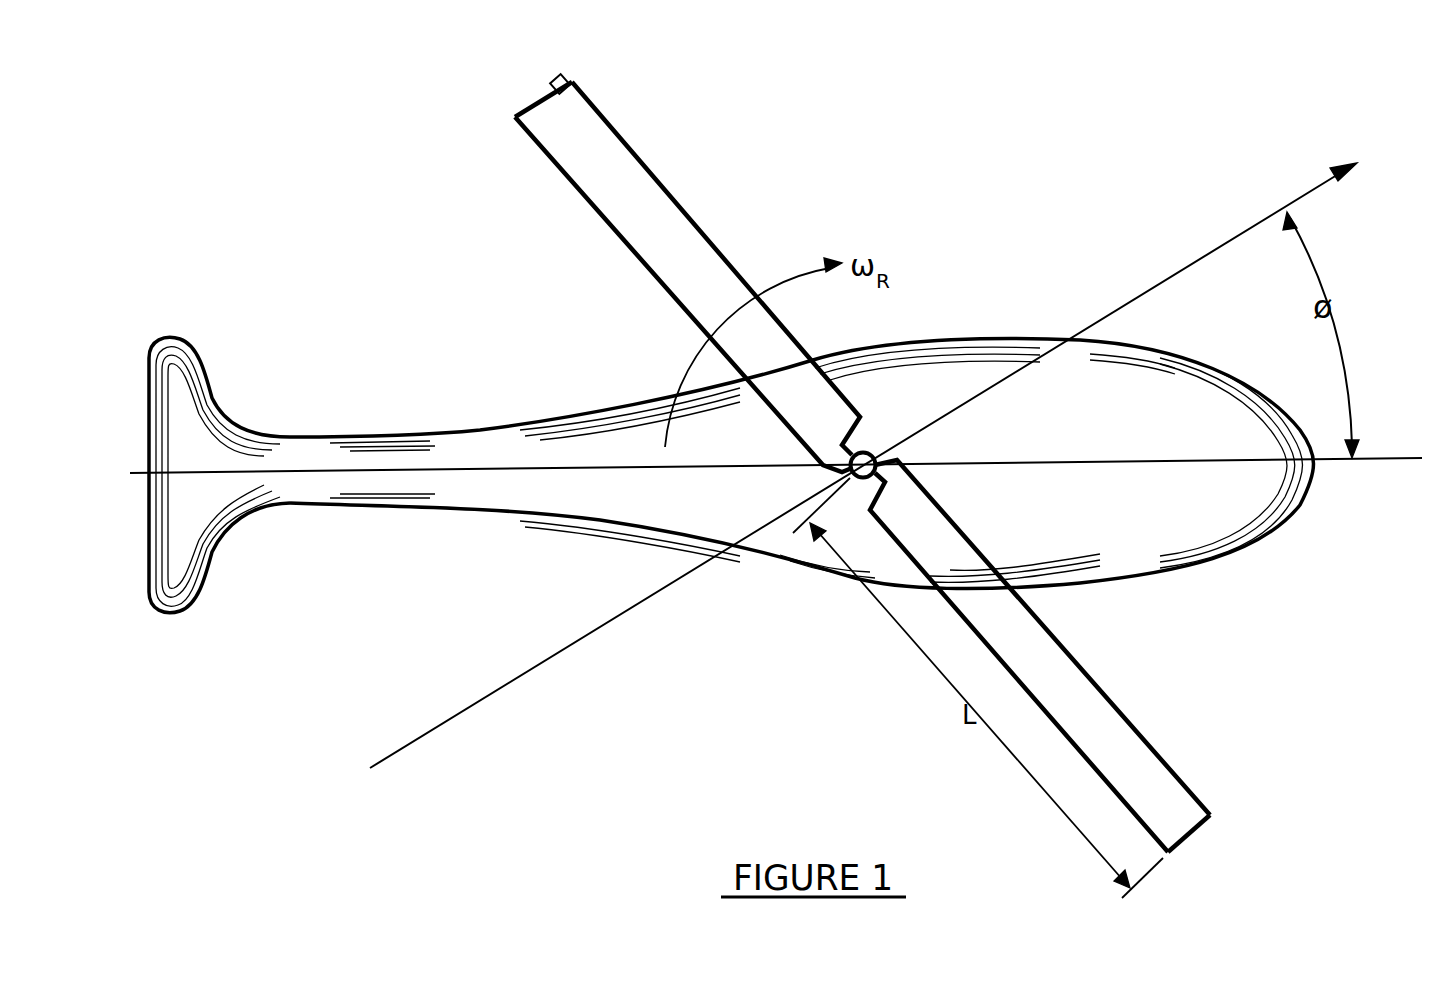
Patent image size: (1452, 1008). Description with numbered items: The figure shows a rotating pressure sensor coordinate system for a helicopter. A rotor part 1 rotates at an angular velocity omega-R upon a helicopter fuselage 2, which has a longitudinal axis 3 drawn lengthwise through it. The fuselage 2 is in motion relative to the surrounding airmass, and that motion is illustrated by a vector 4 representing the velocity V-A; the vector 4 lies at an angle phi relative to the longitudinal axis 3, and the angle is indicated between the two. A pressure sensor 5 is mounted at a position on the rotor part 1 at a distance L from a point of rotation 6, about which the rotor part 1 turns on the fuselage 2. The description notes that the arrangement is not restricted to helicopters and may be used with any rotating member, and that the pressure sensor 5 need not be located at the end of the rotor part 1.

The helicopter rotor part 1 is at (582, 200).
The helicopter fuselage 2 is at (1168, 577).
The longitudinal axis 3 is at (1388, 460).
The vector 4 is at (1312, 195).
The pressure sensor 5 is at (552, 75).
The point of rotation 6 is at (862, 450).